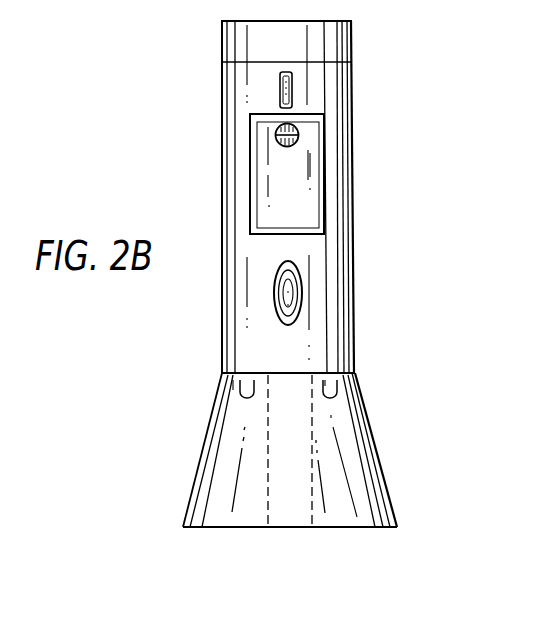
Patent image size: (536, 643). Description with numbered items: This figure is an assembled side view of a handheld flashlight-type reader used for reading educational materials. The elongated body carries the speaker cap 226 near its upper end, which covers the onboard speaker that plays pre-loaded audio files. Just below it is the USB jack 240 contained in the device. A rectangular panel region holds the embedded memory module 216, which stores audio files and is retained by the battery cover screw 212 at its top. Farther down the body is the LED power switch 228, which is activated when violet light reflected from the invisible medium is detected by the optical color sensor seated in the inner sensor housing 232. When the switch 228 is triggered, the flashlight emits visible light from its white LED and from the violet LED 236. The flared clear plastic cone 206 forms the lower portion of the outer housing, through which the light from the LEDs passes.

The speaker cap 226 is at (342, 45).
The USB jack 240 is at (292, 93).
The embedded memory module 216 is at (295, 210).
The battery cover screw 212 is at (298, 139).
The LED power switch 228 is at (292, 293).
The clear plastic cone 206 is at (355, 515).
The inner sensor housing 232 is at (302, 478).
The violet LED 236 is at (335, 393).